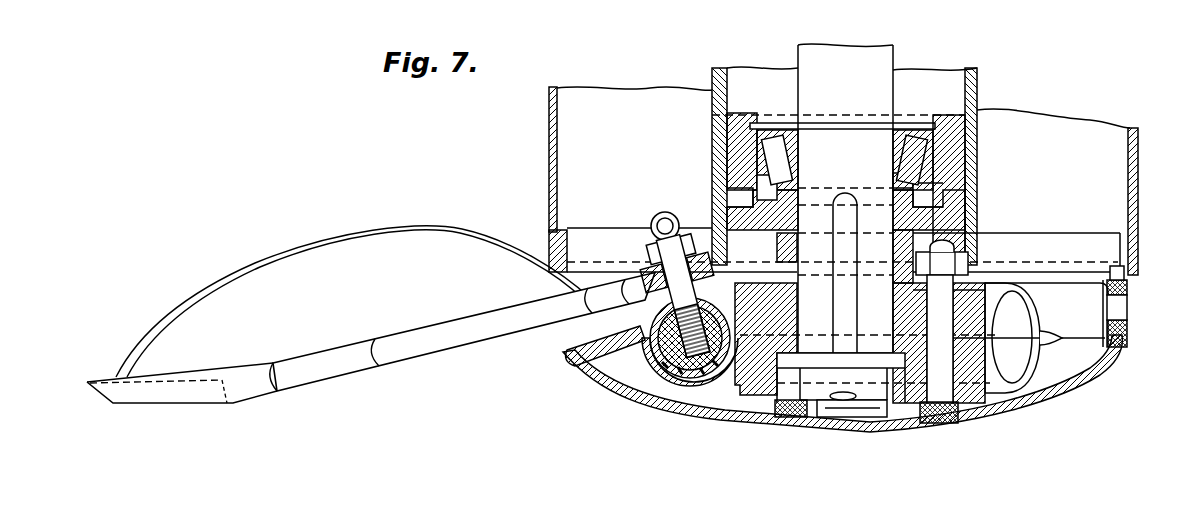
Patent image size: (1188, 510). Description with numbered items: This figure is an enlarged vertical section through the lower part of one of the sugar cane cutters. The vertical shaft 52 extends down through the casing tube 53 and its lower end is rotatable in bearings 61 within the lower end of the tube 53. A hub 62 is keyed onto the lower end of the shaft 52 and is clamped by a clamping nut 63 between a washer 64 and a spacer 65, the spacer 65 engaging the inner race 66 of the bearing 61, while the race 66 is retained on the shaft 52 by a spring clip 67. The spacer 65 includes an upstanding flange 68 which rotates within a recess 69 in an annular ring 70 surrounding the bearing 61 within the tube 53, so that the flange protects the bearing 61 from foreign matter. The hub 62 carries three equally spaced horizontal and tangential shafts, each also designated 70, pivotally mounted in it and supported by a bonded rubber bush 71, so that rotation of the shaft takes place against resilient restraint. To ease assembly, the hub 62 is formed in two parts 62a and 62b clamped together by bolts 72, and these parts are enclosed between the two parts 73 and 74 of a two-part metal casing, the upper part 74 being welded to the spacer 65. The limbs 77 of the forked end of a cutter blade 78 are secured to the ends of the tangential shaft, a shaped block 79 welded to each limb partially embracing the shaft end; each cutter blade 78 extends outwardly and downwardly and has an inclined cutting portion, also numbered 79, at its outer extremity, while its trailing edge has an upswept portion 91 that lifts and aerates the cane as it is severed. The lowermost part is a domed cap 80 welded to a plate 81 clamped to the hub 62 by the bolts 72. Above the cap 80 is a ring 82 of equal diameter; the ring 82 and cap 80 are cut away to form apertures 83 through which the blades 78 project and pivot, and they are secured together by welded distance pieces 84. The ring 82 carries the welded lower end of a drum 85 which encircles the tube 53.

The vertical shaft 52 is at (815, 73).
The casing tube 53 is at (720, 78).
The bearings 61 is at (775, 147).
The hub 62 is at (750, 368).
The hub part 62a is at (968, 370).
The hub part 62b is at (968, 312).
The clamping nut 63 is at (806, 383).
The washer 64 is at (893, 365).
The spacer 65 is at (905, 252).
The inner race 66 is at (903, 148).
The spring clip 67 is at (878, 128).
The upstanding flange 68 is at (953, 205).
The recess 69 is at (955, 187).
The annular ring / tangential shaft 70 is at (950, 128).
The bonded rubber bush 71 is at (713, 372).
The bolts 72 is at (940, 370).
The casing part 73 is at (767, 388).
The upper casing part 74 is at (972, 283).
The limbs 77 is at (607, 260).
The cutter blade 78 is at (433, 343).
The shaped block / inclined cutting portion 79 is at (175, 396).
The domed cap 80 is at (863, 426).
The plate 81 is at (1013, 400).
The ring 82 is at (1115, 266).
The apertures 83 is at (577, 348).
The distance pieces 84 is at (1112, 283).
The drum 85 is at (1128, 178).
The upswept portion 91 is at (449, 258).